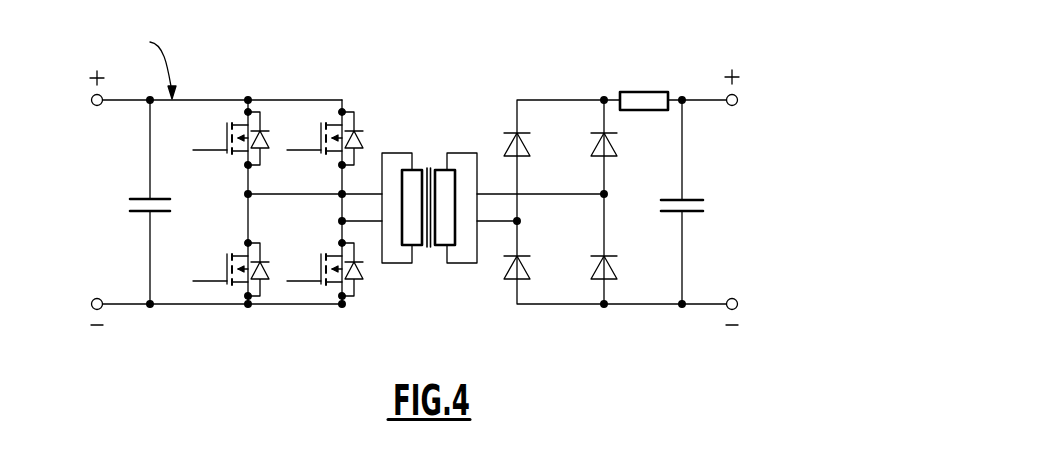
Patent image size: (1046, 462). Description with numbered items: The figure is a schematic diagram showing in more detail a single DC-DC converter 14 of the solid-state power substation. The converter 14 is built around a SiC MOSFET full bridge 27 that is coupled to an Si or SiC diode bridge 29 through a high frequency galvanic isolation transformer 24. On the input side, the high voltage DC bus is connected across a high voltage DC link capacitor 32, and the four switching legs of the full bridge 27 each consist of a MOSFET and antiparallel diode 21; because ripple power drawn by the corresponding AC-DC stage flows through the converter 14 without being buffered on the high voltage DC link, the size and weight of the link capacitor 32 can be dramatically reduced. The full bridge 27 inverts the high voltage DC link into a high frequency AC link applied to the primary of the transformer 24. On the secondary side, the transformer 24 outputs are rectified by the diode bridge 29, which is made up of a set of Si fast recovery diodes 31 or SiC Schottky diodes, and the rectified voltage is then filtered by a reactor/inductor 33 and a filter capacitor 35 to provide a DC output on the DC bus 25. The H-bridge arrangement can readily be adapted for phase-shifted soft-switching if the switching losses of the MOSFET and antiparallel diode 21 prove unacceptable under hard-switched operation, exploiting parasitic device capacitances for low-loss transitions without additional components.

The DC-DC converter 14 is at (446, 31).
The MOSFET and antiparallel diode 21 is at (267, 143).
The high frequency galvanic isolation transformer 24 is at (424, 260).
The DC bus 25 is at (792, 193).
The SiC MOSFET full bridge 27 is at (319, 90).
The diode bridge 29 is at (565, 99).
The fast recovery diodes 31 is at (521, 280).
The high voltage DC link capacitor 32 is at (160, 213).
The reactor/inductor 33 is at (660, 91).
The filter capacitor 35 is at (672, 213).